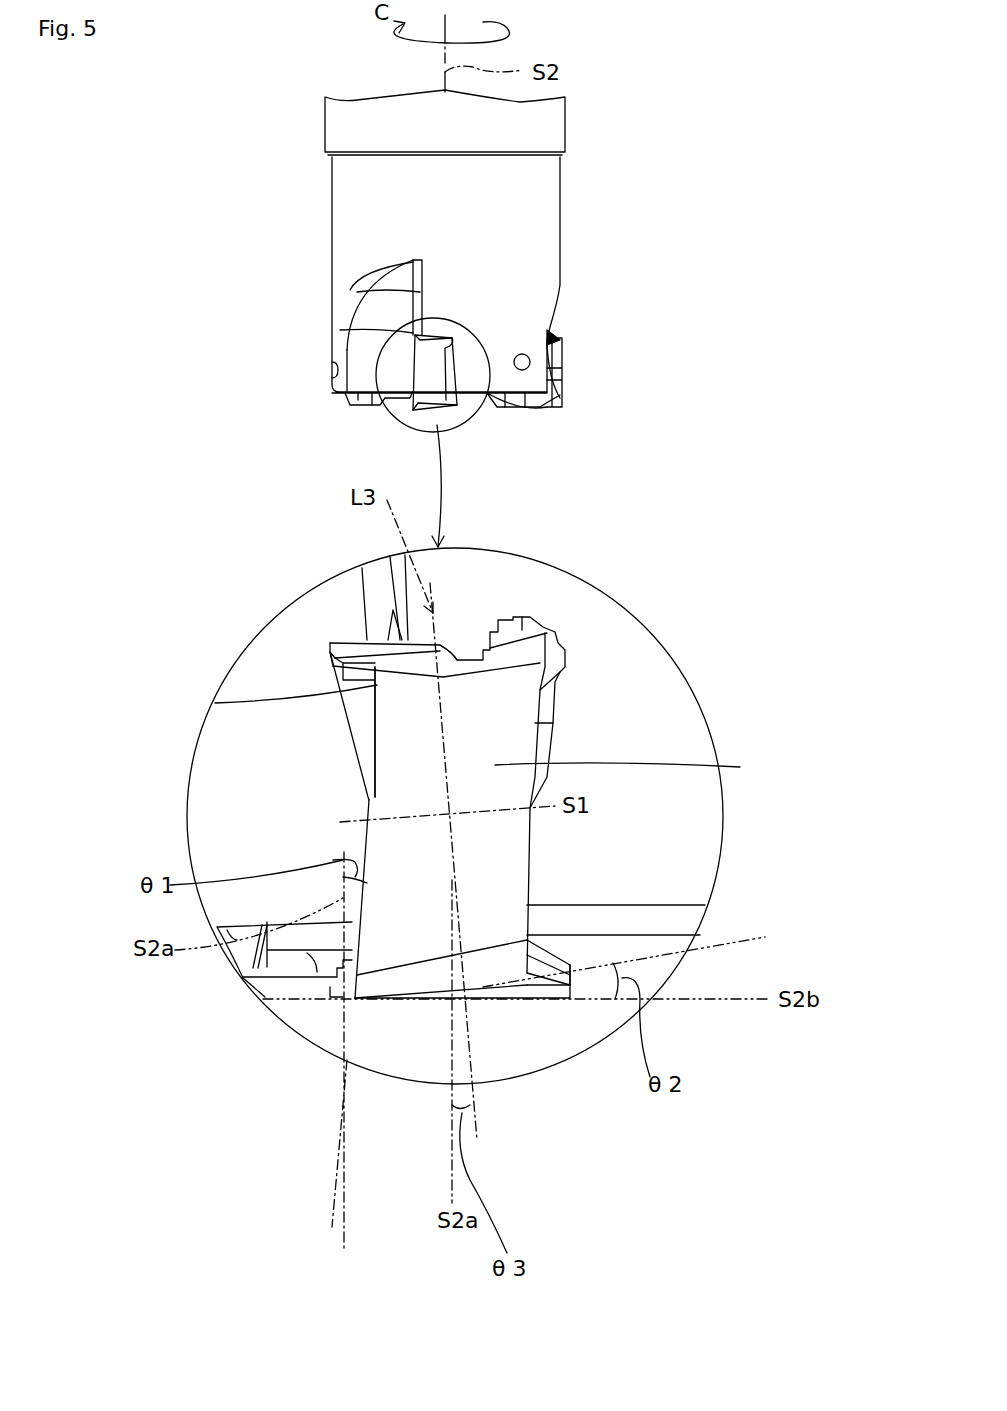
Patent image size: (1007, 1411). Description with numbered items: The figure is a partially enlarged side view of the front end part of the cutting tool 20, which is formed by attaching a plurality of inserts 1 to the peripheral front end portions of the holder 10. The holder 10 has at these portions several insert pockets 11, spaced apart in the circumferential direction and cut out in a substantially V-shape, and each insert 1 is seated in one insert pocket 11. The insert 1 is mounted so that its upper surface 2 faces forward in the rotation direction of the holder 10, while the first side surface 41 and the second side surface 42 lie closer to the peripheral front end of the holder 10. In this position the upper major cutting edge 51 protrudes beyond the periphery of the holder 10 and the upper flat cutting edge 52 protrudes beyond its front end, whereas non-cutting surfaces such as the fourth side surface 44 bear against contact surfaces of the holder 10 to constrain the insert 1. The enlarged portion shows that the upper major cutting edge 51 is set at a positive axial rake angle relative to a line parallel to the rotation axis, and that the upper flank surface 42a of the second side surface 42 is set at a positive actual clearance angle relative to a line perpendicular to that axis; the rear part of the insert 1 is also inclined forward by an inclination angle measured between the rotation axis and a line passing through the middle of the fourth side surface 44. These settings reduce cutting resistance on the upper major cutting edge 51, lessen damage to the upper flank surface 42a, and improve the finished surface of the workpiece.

The cutting tool 20 is at (582, 103).
The holder 10 is at (520, 190).
The insert pocket 11 is at (370, 317).
The insert 1 is at (412, 373).
The upper major cutting edge 51 is at (562, 382).
The upper flat cutting edge 52 is at (548, 412).
The fourth side surface 44 is at (348, 640).
The first side surface 41 is at (498, 765).
The upper surface 2 is at (368, 745).
The second side surface 42 is at (490, 990).
The upper flank surface 42a is at (570, 972).